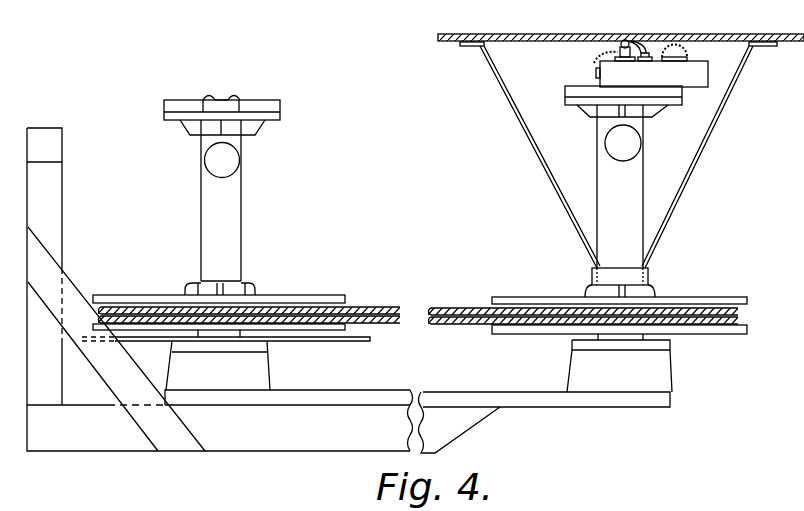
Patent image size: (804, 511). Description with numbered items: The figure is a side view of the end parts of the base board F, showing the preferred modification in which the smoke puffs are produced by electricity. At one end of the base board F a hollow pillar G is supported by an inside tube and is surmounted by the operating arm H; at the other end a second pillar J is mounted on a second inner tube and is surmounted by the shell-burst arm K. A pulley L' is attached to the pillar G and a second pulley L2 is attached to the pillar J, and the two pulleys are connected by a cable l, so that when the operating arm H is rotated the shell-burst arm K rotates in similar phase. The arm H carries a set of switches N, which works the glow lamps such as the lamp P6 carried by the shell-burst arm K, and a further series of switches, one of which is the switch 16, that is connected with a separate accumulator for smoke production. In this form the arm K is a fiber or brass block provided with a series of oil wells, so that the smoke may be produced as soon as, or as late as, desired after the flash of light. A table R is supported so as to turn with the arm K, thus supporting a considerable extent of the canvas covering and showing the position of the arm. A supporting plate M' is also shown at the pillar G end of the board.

The base board F is at (265, 433).
The supporting plate of the wheel pedestal M' is at (246, 367).
The pulley L' is at (247, 293).
The hollow pillar G is at (219, 203).
The set of switches N is at (202, 94).
The operating arm H is at (218, 117).
The switch 16 is at (240, 94).
The table R is at (536, 32).
The second pillar J is at (630, 173).
The shell-burst arm K is at (716, 63).
The glow lamp P6 is at (617, 43).
The pulley L2 is at (732, 283).
The cable l is at (466, 321).